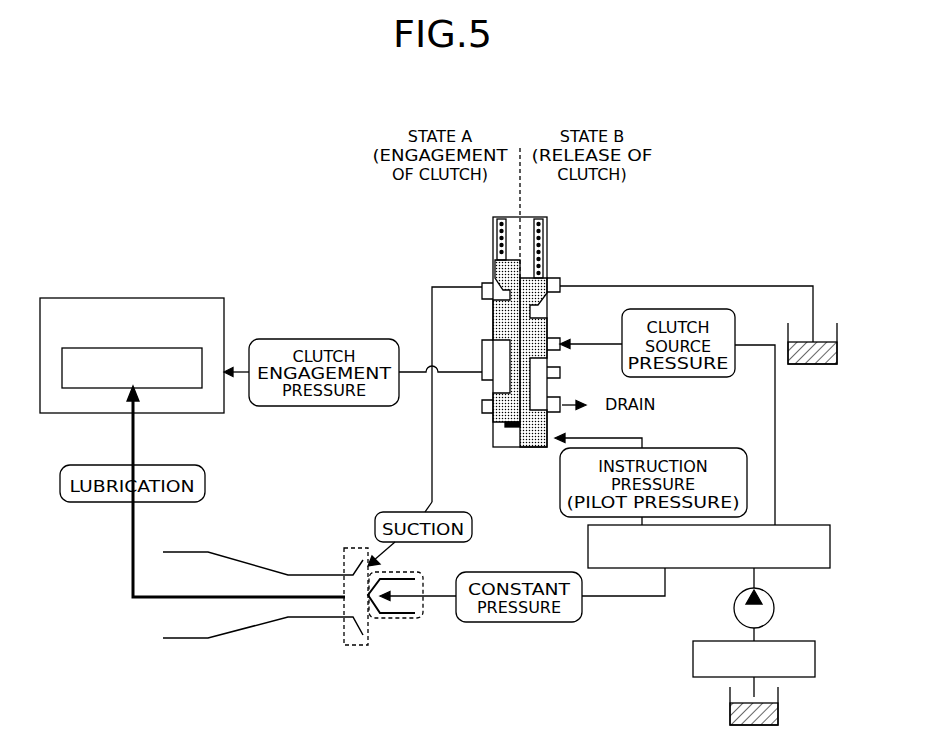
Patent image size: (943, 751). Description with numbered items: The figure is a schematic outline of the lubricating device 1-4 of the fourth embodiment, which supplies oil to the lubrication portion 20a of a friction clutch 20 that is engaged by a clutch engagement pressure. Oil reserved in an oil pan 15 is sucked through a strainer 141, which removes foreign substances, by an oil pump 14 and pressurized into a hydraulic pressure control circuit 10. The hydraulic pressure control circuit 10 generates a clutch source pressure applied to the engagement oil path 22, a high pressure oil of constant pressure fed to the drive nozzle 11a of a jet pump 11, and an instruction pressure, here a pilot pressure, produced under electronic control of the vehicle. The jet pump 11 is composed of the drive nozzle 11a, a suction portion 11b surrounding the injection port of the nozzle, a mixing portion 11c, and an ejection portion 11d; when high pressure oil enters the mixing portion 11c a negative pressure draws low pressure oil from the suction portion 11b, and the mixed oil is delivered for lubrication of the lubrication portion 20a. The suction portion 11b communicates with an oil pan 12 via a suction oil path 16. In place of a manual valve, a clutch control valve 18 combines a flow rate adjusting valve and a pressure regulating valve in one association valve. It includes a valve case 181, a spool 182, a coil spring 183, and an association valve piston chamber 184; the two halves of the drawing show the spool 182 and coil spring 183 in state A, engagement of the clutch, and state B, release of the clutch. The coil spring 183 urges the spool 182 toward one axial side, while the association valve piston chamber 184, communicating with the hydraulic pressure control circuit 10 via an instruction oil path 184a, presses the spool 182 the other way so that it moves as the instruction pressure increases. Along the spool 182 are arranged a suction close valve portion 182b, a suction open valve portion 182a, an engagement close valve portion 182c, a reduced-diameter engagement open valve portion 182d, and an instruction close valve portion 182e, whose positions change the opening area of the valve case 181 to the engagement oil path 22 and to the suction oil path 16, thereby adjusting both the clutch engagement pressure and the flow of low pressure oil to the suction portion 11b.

The lubricating device 1-4 is at (720, 122).
The hydraulic pressure control circuit 10 is at (797, 525).
The jet pump 11 is at (311, 603).
The drive nozzle 11a is at (414, 615).
The suction portion 11b is at (356, 548).
The mixing portion 11c is at (310, 573).
The ejection portion 11d is at (170, 551).
The oil pan 12 is at (812, 365).
The oil pump 14 is at (771, 598).
The strainer 141 is at (770, 641).
The oil pan 15 is at (780, 716).
The suction oil path 16 is at (432, 462).
The clutch control valve 18 is at (511, 346).
The valve case 181 is at (497, 448).
The spool 182 is at (540, 448).
The suction open valve portion 182a is at (494, 288).
The suction close valve portion 182b is at (494, 266).
The engagement close valve portion 182c is at (482, 295).
The engagement open valve portion 182d is at (500, 358).
The instruction close valve portion 182e is at (494, 421).
The coil spring 183 is at (548, 228).
The association valve piston chamber 184 is at (492, 436).
The instruction oil path 184a is at (555, 433).
The friction clutch 20 is at (163, 298).
The lubrication portion 20a is at (163, 348).
The engagement oil path 22 is at (416, 374).